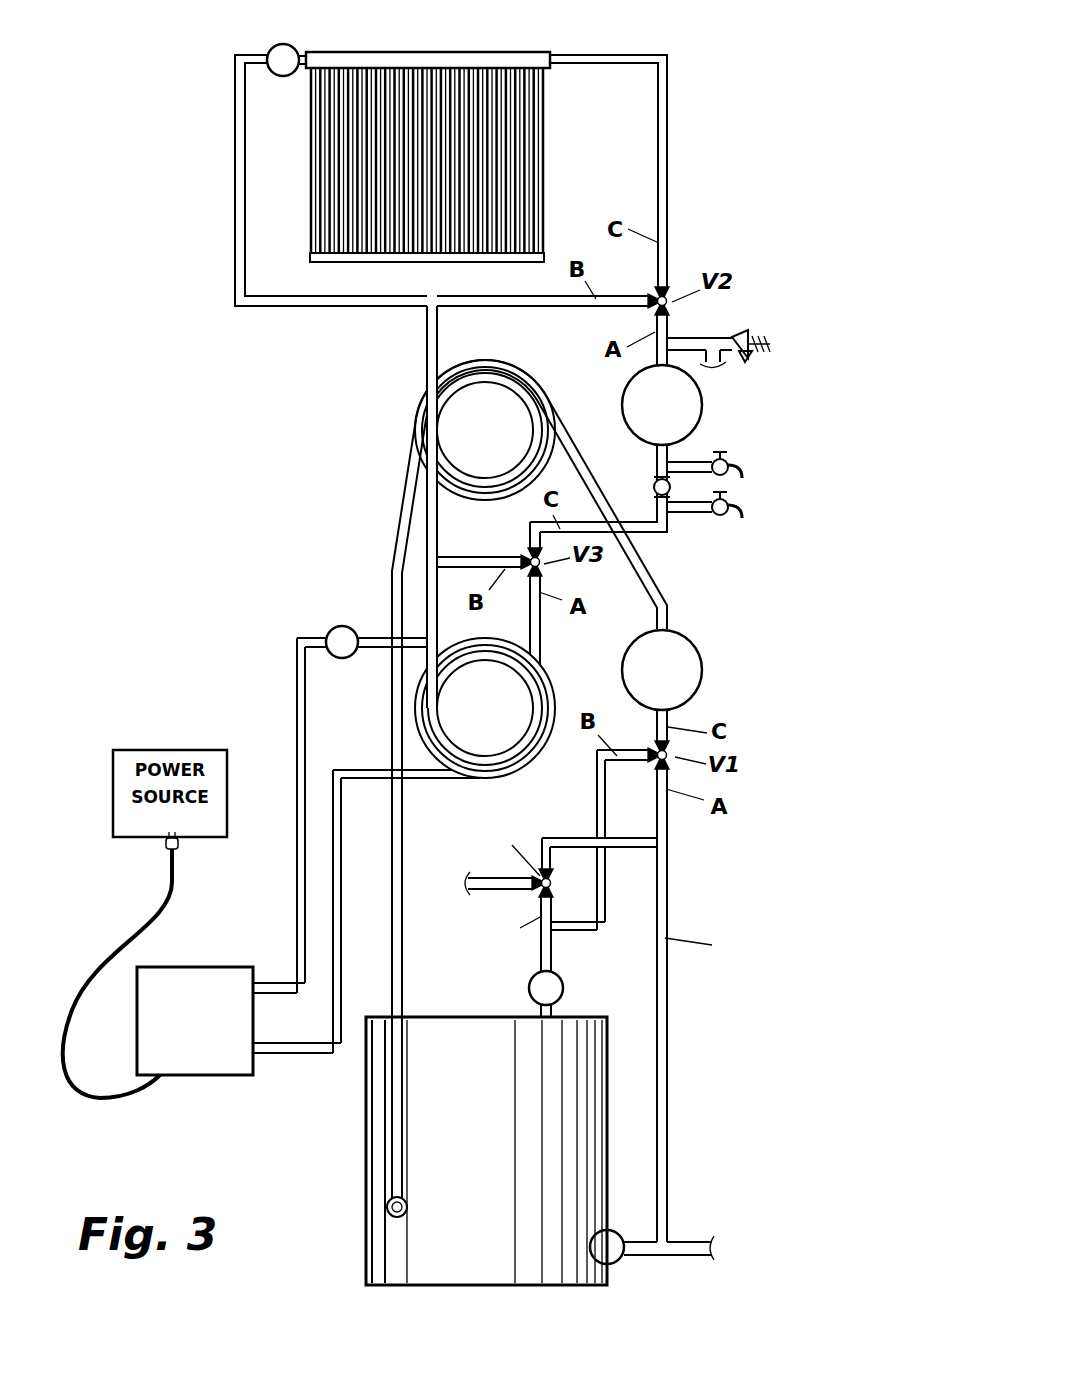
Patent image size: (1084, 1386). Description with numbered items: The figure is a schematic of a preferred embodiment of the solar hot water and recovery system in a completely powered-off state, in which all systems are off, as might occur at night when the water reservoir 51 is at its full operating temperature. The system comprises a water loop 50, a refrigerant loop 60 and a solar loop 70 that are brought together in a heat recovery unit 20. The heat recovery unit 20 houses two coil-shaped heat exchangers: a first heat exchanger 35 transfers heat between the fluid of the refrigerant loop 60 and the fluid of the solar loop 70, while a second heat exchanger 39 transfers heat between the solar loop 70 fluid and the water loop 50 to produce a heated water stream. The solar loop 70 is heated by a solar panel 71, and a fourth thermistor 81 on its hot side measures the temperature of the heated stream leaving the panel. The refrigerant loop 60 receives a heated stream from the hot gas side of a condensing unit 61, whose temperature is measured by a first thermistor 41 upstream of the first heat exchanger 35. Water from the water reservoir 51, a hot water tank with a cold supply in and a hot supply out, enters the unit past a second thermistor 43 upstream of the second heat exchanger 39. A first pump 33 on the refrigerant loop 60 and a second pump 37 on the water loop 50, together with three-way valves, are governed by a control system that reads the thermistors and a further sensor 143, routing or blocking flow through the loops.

The heat recovery unit 20 is at (397, 443).
The first pump 33 is at (705, 405).
The first heat exchanger 35 is at (545, 672).
The second pump 37 is at (698, 652).
The second heat exchanger 39 is at (517, 372).
The first thermistor 41 is at (331, 633).
The second thermistor 43 is at (612, 1243).
The water loop 50 is at (682, 901).
The water reservoir 51 is at (363, 1150).
The refrigerant loop 60 is at (284, 695).
The condensing unit 61 is at (209, 965).
The solar loop 70 is at (230, 211).
The solar panel 71 is at (543, 176).
The fourth thermistor 81 is at (276, 52).
The sensor 143 is at (538, 978).